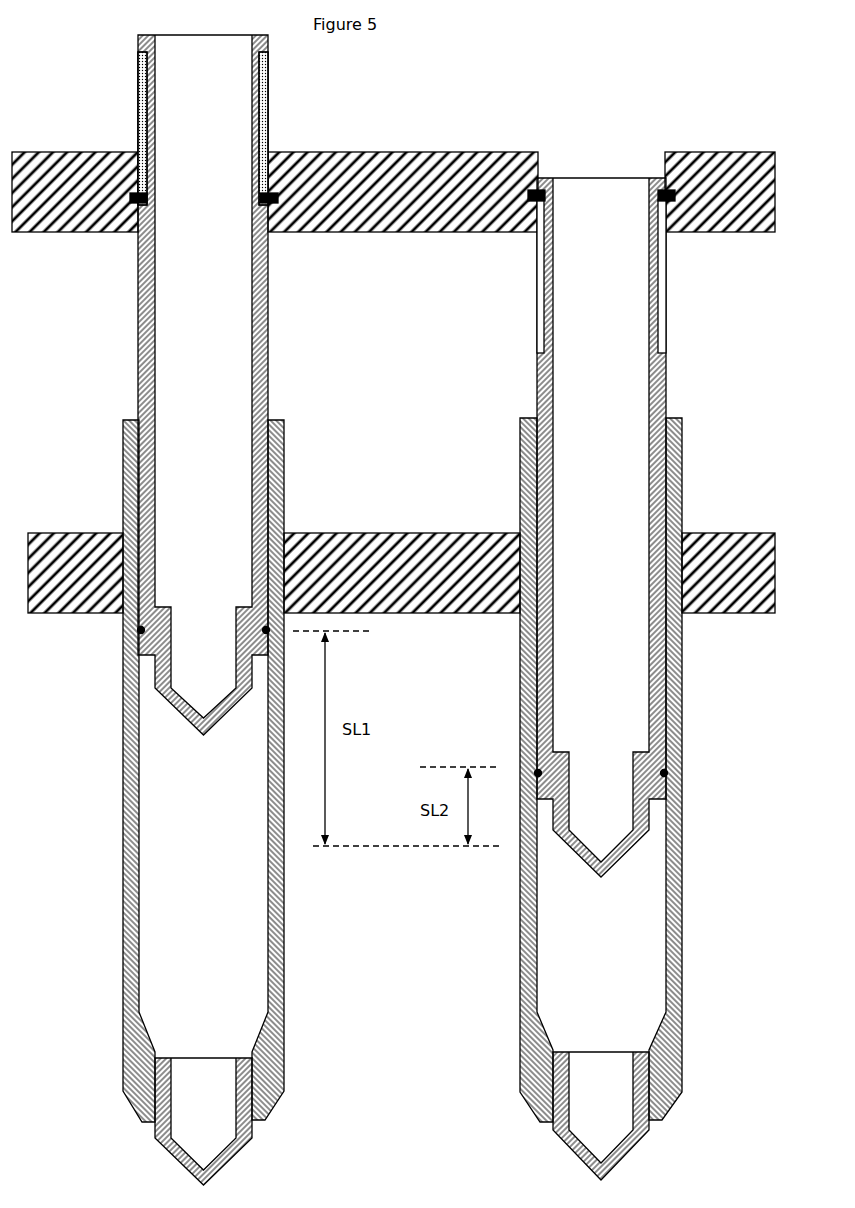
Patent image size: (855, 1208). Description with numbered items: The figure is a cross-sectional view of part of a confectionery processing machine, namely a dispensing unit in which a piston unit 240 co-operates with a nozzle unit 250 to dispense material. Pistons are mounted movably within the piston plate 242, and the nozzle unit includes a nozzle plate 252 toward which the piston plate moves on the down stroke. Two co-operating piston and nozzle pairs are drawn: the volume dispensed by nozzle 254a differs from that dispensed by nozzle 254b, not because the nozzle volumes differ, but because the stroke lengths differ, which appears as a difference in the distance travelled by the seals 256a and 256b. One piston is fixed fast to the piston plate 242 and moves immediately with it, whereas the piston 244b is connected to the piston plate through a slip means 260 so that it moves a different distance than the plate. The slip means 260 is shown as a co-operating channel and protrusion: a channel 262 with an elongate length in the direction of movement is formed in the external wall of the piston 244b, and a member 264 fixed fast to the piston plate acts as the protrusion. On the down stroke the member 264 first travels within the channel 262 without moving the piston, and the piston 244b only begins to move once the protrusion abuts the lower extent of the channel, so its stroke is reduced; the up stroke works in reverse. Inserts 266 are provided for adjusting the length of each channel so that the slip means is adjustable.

The piston unit 240 is at (76, 175).
The piston plate 242 is at (521, 192).
The piston 244b is at (139, 290).
The nozzle unit 250 is at (76, 540).
The nozzle plate 252 is at (529, 573).
The nozzle 254a is at (123, 845).
The nozzle 254b is at (647, 862).
The seal 256a is at (141, 630).
The seal 256b is at (664, 773).
The slip means 260 is at (644, 623).
The channel 262 is at (659, 305).
The member 264 is at (651, 182).
The insert 266 is at (262, 118).